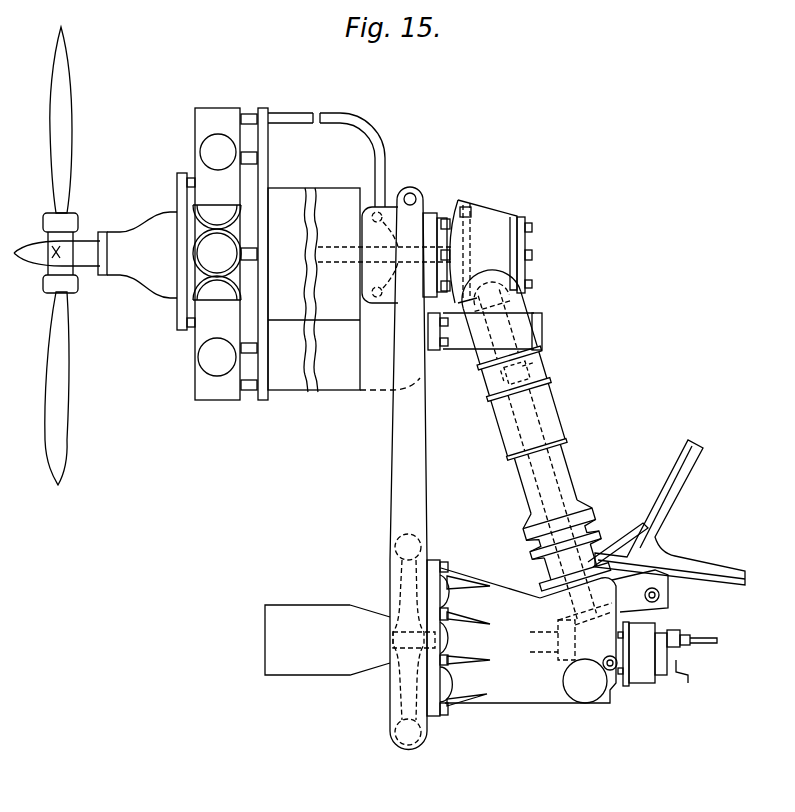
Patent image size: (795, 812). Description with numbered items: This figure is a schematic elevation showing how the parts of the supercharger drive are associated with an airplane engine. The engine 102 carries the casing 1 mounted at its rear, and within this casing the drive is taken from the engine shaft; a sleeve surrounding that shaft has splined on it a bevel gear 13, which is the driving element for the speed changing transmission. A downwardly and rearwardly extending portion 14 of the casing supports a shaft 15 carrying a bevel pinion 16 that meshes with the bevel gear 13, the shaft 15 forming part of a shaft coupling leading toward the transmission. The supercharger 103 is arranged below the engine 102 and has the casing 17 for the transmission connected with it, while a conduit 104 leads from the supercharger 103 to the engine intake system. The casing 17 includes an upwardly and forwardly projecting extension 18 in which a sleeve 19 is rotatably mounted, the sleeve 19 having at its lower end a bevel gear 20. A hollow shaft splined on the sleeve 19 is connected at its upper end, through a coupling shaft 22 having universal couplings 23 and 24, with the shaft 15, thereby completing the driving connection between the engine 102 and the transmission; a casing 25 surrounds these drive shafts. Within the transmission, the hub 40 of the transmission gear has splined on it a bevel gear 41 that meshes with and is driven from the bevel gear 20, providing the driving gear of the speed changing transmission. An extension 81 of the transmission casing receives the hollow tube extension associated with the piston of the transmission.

The casing 1 is at (505, 215).
The bevel gear 13 is at (470, 198).
The downwardly and rearwardly extending portion of the casing 14 is at (506, 287).
The shaft 15 is at (483, 333).
The bevel pinion 16 is at (533, 274).
The casing for the transmission 17 is at (554, 704).
The upwardly and forwardly projecting extension 18 is at (612, 568).
The sleeve 19 is at (549, 565).
The bevel gear 20 is at (564, 578).
The coupling shaft 22 is at (541, 539).
The universal coupling 23 is at (544, 534).
The universal coupling 24 is at (540, 373).
The casing 25 is at (555, 418).
The hub 40 is at (477, 638).
The bevel gear 41 is at (565, 666).
The extension of the transmission casing 81 is at (690, 641).
The engine 102 is at (200, 150).
The supercharger 103 is at (392, 576).
The conduit 104 is at (395, 458).